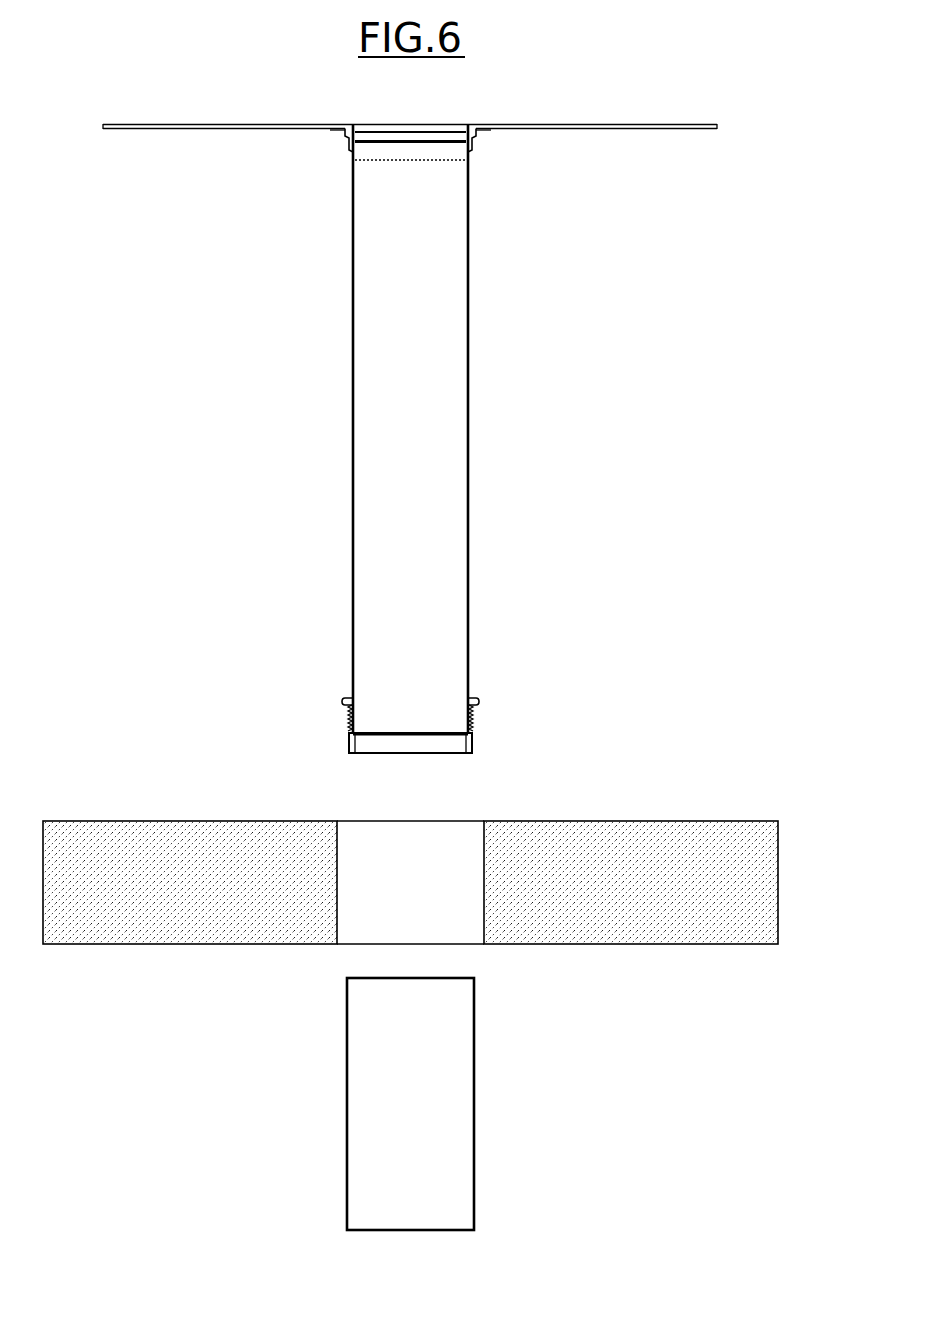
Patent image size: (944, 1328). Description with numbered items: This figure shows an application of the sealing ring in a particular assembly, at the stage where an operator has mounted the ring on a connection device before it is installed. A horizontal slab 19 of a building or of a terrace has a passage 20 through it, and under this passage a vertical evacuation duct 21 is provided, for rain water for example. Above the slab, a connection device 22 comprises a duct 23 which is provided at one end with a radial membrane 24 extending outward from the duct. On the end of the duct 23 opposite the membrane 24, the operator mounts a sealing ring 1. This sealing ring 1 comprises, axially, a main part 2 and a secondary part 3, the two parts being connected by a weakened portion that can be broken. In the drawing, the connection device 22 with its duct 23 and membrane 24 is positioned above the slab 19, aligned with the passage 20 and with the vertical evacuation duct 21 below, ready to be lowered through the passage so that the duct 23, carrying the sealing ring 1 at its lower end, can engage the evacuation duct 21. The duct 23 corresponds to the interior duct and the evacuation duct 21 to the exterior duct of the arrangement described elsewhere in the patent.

The sealing ring 1 is at (490, 724).
The main part 2 is at (484, 689).
The secondary part 3 is at (418, 765).
The horizontal slab 19 is at (188, 818).
The passage 20 is at (337, 851).
The vertical evacuation duct 21 is at (476, 1065).
The connection device 22 is at (268, 356).
The duct 23 is at (470, 476).
The radial membrane 24 is at (605, 122).